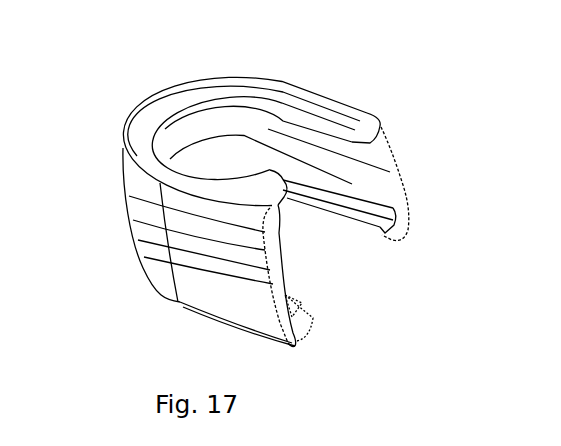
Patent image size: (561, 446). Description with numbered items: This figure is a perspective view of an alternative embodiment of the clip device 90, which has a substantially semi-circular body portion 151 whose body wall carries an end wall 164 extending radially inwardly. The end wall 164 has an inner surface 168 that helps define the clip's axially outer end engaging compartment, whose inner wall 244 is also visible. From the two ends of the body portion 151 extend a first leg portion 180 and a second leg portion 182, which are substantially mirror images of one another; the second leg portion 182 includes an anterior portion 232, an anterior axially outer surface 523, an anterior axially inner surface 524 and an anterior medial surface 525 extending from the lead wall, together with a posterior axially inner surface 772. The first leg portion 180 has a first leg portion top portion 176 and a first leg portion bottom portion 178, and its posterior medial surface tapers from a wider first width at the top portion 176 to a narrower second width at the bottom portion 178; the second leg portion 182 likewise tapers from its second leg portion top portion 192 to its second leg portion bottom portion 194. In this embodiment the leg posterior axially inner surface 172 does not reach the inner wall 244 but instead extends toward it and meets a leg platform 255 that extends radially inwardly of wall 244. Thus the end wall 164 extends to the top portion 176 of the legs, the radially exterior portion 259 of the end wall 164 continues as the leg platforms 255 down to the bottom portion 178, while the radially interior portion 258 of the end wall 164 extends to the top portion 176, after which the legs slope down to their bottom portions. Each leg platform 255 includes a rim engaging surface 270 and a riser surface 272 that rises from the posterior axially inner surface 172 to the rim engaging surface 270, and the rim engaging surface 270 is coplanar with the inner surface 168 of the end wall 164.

The clip device 90 is at (249, 222).
The body portion 151 is at (138, 258).
The end wall 164 is at (279, 205).
The inner surface 168 is at (220, 177).
The posterior axially inner surface 172 is at (313, 307).
The first leg portion top portion 176 is at (178, 302).
The first leg portion bottom portion 178 is at (288, 354).
The first leg portion 180 is at (230, 282).
The second leg portion 182 is at (315, 92).
The second leg portion top portion 192 is at (281, 69).
The second leg portion bottom portion 194 is at (415, 150).
The anterior portion 232 is at (405, 90).
The inner wall 244 is at (378, 184).
The leg platform 255 is at (395, 221).
The radially interior portion 258 is at (277, 186).
The radially exterior portion 259 is at (292, 178).
The rim engaging surface 270 is at (347, 197).
The riser surface 272 is at (360, 212).
The anterior axially outer surface 523 is at (345, 111).
The anterior axially inner surface 524 is at (342, 143).
The anterior medial surface 525 is at (330, 122).
The posterior axially inner surface 772 is at (377, 236).